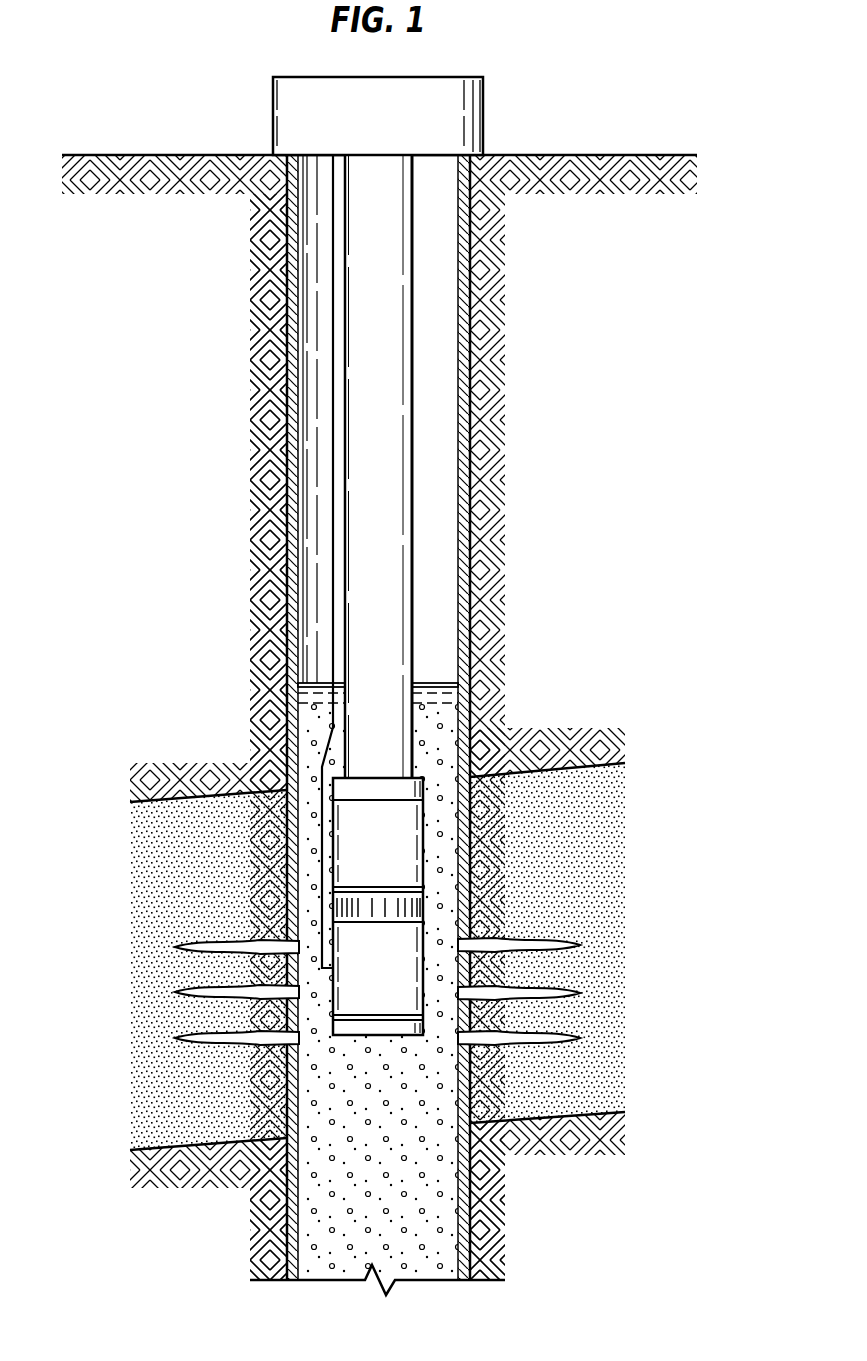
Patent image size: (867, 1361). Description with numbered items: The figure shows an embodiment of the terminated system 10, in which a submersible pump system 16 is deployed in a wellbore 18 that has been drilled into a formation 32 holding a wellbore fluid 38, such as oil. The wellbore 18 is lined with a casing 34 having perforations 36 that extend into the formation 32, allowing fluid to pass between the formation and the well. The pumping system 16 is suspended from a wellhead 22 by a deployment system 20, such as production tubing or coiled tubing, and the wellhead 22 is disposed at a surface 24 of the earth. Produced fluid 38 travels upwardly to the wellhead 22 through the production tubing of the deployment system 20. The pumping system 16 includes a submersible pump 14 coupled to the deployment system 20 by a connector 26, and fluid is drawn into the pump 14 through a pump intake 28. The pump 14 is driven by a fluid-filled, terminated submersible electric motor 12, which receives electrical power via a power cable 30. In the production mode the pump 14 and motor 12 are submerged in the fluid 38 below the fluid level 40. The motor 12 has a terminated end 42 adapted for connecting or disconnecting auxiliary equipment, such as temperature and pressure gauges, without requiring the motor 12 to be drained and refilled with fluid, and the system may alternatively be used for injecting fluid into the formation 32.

The terminated system 10 is at (433, 858).
The submersible electric motor 12 is at (361, 987).
The submersible pump 14 is at (361, 860).
The submersible pump system 16 is at (545, 520).
The wellbore 18 is at (438, 403).
The deployment system 20 is at (415, 287).
The wellhead 22 is at (361, 132).
The surface 24 is at (613, 155).
The connector 26 is at (348, 787).
The pump intake 28 is at (333, 905).
The power cable 30 is at (330, 560).
The formation 32 is at (546, 892).
The casing 34 is at (287, 422).
The perforations 36 is at (580, 945).
The wellbore fluid 38 is at (361, 1164).
The fluid level 40 is at (437, 686).
The terminated end 42 is at (350, 1027).